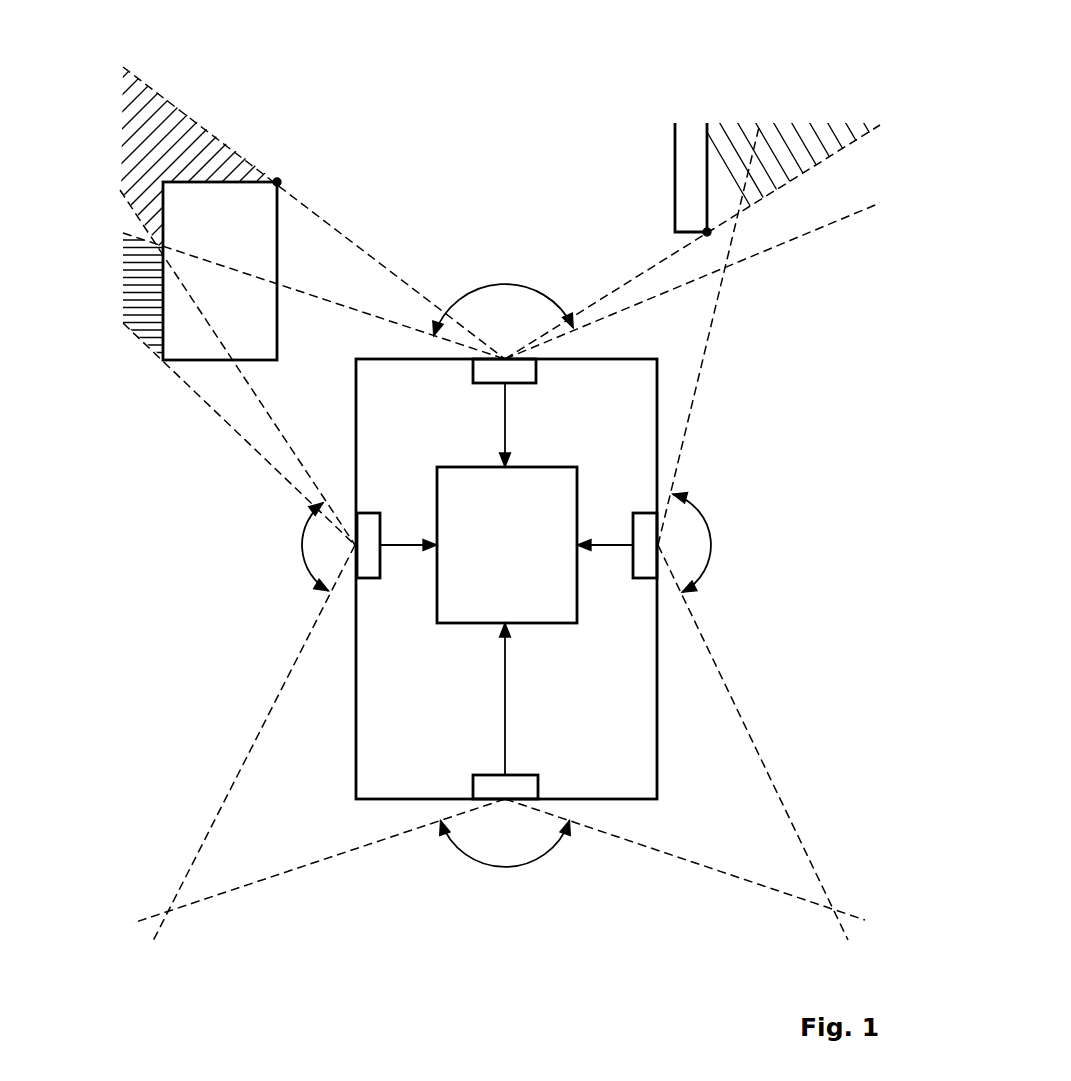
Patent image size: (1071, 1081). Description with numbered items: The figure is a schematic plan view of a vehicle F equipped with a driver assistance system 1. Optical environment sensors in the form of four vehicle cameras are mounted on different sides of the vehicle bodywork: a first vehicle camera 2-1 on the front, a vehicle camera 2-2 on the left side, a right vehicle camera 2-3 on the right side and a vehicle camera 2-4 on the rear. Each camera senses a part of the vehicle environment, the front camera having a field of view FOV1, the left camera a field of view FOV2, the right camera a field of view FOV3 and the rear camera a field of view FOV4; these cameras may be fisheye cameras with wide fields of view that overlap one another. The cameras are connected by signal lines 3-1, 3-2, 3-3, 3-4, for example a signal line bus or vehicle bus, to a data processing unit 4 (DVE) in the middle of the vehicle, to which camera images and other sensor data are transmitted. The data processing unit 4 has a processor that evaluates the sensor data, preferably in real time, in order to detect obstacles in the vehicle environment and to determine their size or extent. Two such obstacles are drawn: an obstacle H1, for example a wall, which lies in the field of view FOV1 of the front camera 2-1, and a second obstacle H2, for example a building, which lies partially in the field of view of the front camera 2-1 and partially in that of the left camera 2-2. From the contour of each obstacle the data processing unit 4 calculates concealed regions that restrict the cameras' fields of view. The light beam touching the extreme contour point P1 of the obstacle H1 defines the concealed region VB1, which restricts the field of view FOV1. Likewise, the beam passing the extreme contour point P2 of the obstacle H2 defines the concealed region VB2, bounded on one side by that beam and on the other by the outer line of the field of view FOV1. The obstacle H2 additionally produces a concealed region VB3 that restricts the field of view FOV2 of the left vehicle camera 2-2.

The driver assistance system 1 is at (786, 447).
The vehicle F is at (658, 753).
The data processing unit 4 is at (456, 466).
The first vehicle camera 2-1 is at (528, 370).
The left vehicle camera 2-2 is at (367, 520).
The right vehicle camera 2-3 is at (645, 512).
The rear vehicle camera 2-4 is at (528, 790).
The signal line 3-1 is at (506, 420).
The signal line 3-2 is at (400, 545).
The signal line 3-3 is at (612, 545).
The signal line 3-4 is at (506, 712).
The field of view of the front vehicle camera FOV1 is at (505, 284).
The field of view of the left vehicle camera FOV2 is at (302, 545).
The field of view of the right vehicle camera FOV3 is at (712, 545).
The field of view of the rear vehicle camera FOV4 is at (505, 868).
The first obstacle H1 is at (675, 155).
The second obstacle H2 is at (278, 232).
The extreme contour point of obstacle H1 P1 is at (708, 233).
The extreme contour point of obstacle H2 P2 is at (278, 181).
The first concealed region VB1 is at (787, 132).
The second concealed region VB2 is at (138, 130).
The third concealed region VB3 is at (135, 290).